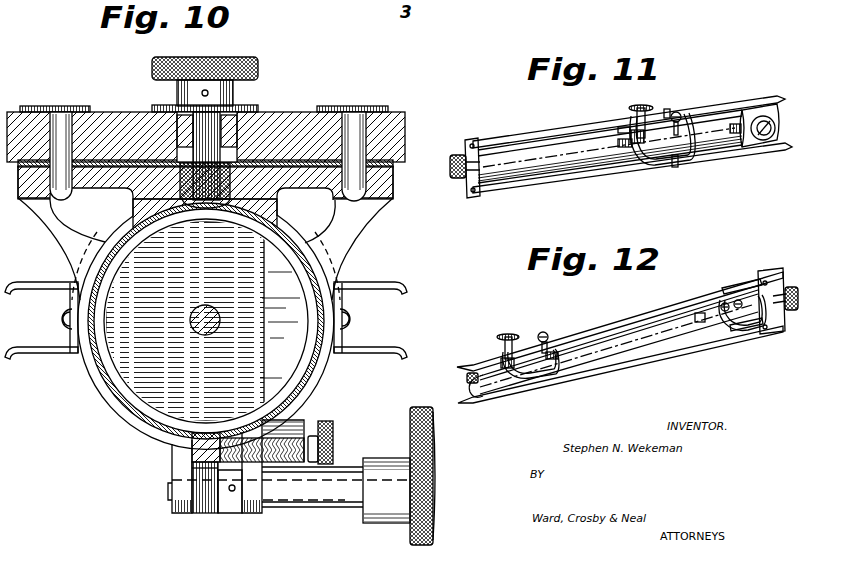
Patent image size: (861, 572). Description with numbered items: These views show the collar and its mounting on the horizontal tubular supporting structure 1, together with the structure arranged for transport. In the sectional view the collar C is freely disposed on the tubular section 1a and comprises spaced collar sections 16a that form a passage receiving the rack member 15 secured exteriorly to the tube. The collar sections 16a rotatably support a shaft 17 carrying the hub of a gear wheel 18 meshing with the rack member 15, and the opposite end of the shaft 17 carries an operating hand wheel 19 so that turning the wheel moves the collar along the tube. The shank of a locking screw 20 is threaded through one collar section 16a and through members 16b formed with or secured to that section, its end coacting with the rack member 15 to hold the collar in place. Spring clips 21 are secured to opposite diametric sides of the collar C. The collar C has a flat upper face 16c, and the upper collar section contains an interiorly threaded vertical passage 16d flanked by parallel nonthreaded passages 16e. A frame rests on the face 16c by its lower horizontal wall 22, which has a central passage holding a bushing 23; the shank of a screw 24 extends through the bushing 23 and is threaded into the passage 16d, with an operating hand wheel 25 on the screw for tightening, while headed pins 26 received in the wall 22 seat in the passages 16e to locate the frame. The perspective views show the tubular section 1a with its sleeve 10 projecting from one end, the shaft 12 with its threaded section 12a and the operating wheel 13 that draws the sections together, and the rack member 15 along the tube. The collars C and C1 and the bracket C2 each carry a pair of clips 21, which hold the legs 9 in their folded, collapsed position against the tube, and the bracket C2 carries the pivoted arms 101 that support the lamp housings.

In FIG. 11, the horizontal tubular supporting structure 1 is at (510, 153).
In FIG. 12, the horizontal tubular supporting structure 1 is at (463, 397).
In FIG. 10, the tubular section 1a is at (140, 418).
In FIG. 11, the tubular section 1a is at (715, 124).
In FIG. 11, the legs 9 is at (546, 140).
In FIG. 12, the legs 9 is at (612, 322).
In FIG. 11, the sleeve 10 is at (750, 120).
In FIG. 10, the shaft 12 is at (213, 311).
In FIG. 11, the threaded section 12a is at (767, 122).
In FIG. 11, the operating wheel 13 is at (456, 154).
In FIG. 10, the rack member 15 is at (206, 440).
In FIG. 11, the rack member 15 is at (633, 140).
In FIG. 12, the rack member 15 is at (700, 313).
In FIG. 10, the collar sections 16a is at (176, 507).
In FIG. 10, the members 16b is at (288, 432).
In FIG. 10, the flat upper face 16c is at (302, 186).
In FIG. 10, the vertical passage 16d is at (180, 188).
In FIG. 10, the nonthreaded passages 16e is at (55, 198).
In FIG. 10, the shaft 17 is at (168, 486).
In FIG. 10, the gear wheel 18 is at (208, 514).
In FIG. 11, the gear wheel 18 is at (628, 147).
In FIG. 12, the gear wheel 18 is at (503, 365).
In FIG. 10, the operating hand wheel 19 is at (428, 462).
In FIG. 11, the operating hand wheel 19 is at (641, 106).
In FIG. 12, the operating hand wheel 19 is at (509, 334).
In FIG. 10, the locking screw 20 is at (333, 436).
In FIG. 11, the locking screw 20 is at (679, 113).
In FIG. 12, the locking screw 20 is at (548, 334).
In FIG. 10, the spring clips 21 is at (48, 360).
In FIG. 11, the spring clips 21 is at (667, 110).
In FIG. 10, the lower horizontal wall 22 is at (292, 162).
In FIG. 10, the bushing 23 is at (236, 125).
In FIG. 10, the screw 24 is at (185, 172).
In FIG. 10, the operating hand wheel 25 is at (250, 58).
In FIG. 10, the headed pins 26 is at (54, 124).
In FIG. 10, the collar C is at (322, 368).
In FIG. 11, the collar C is at (656, 160).
In FIG. 12, the collar C1 is at (527, 380).
In FIG. 12, the bracket C2 is at (744, 328).
In FIG. 12, the arms 101 is at (740, 283).